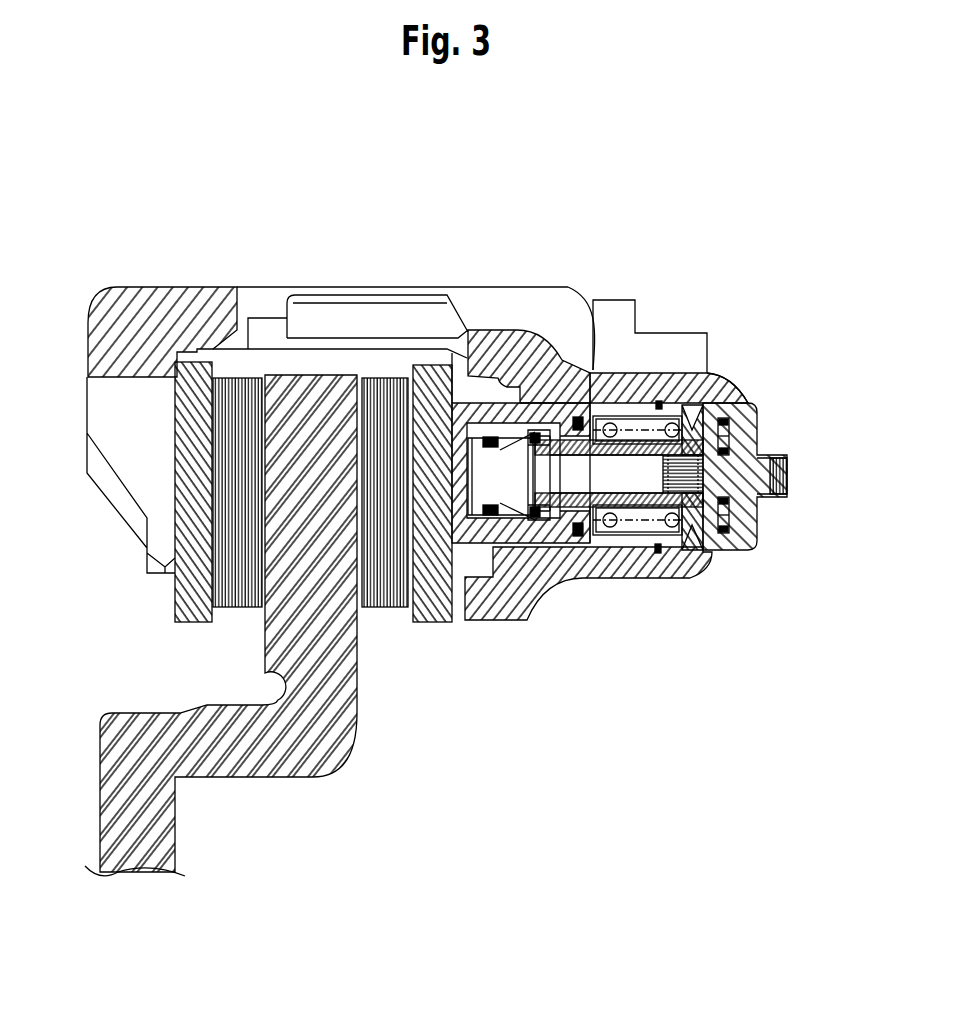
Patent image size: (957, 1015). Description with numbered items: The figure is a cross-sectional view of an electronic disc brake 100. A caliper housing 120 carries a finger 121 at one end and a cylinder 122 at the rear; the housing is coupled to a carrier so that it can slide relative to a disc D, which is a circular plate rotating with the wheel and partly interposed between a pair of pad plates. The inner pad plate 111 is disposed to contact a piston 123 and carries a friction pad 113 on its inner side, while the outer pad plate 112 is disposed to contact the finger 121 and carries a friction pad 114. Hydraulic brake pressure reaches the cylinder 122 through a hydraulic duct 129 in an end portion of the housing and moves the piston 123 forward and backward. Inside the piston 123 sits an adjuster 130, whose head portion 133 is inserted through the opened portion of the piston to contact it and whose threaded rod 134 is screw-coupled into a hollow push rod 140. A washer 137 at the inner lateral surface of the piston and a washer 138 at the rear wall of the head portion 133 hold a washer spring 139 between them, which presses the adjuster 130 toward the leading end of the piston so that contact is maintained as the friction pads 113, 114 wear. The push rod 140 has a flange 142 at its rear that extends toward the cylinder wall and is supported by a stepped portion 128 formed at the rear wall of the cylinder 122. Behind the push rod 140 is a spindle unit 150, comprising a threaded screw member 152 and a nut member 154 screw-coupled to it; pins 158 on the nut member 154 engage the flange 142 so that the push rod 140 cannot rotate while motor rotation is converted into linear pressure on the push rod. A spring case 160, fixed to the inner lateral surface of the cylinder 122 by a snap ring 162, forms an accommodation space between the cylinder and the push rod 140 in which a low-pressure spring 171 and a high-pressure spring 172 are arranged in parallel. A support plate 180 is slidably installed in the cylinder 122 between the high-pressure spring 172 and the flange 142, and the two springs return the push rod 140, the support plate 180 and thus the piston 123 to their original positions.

The electronic disc brake 100 is at (623, 224).
The caliper housing 120 is at (262, 282).
The finger 121 is at (95, 416).
The outer pad plate 112 is at (190, 622).
The friction pad 114 is at (233, 607).
The friction pad 113 is at (385, 608).
The inner pad plate 111 is at (428, 622).
The disc D is at (320, 758).
The piston 123 is at (476, 580).
The adjuster 130 is at (527, 570).
The head portion 133 is at (490, 518).
The rod 134 is at (548, 522).
The washer 138 is at (493, 434).
The washer spring 139 is at (575, 418).
The washer 137 is at (567, 370).
The spring case 160 is at (600, 415).
The high-pressure spring 172 is at (603, 548).
The low-pressure spring 171 is at (650, 553).
The hydraulic duct 129 is at (652, 402).
The snap ring 162 is at (660, 401).
The cylinder 122 is at (686, 375).
The flange 142 is at (714, 386).
The push rod 140 is at (675, 550).
The stepped portion 128 is at (716, 547).
The support plate 180 is at (693, 545).
The spindle unit 150 is at (805, 421).
The screw member 152 is at (783, 458).
The nut member 154 is at (731, 428).
The pins 158 is at (731, 514).